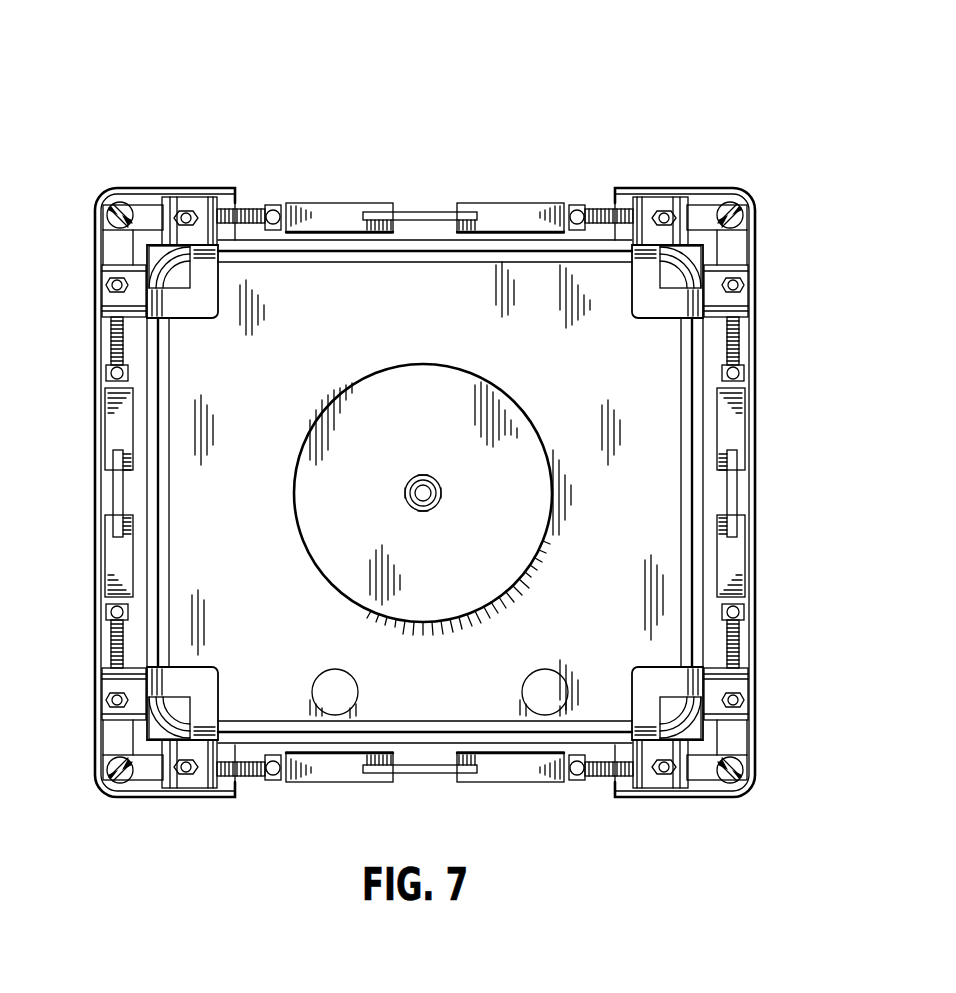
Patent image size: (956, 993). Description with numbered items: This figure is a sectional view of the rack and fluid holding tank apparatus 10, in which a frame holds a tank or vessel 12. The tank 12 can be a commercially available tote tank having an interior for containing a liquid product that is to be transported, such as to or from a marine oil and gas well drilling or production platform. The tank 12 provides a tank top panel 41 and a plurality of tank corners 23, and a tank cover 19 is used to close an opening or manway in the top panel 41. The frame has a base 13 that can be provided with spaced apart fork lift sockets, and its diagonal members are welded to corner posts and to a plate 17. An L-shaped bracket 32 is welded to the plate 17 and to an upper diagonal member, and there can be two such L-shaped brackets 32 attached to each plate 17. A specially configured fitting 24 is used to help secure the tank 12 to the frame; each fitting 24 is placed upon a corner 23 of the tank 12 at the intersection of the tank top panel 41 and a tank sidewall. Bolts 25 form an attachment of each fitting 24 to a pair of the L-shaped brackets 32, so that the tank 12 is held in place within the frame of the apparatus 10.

The rack and fluid holding tank apparatus 10 is at (585, 86).
The tank or vessel 12 is at (262, 562).
The base 13 is at (97, 238).
The plate 17 is at (420, 212).
The tank cover 19 is at (497, 556).
The tank corner 23 is at (152, 212).
The fitting 24 is at (182, 307).
The bolt 25 is at (253, 212).
The L-shaped bracket 32 is at (320, 212).
The tank top panel 41 is at (508, 285).